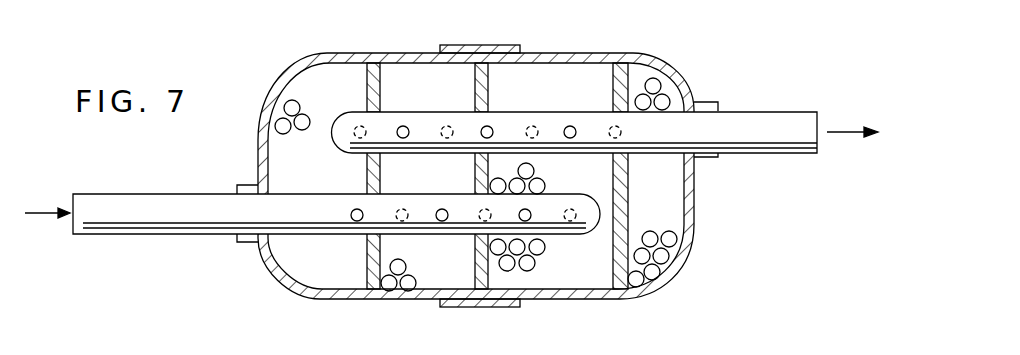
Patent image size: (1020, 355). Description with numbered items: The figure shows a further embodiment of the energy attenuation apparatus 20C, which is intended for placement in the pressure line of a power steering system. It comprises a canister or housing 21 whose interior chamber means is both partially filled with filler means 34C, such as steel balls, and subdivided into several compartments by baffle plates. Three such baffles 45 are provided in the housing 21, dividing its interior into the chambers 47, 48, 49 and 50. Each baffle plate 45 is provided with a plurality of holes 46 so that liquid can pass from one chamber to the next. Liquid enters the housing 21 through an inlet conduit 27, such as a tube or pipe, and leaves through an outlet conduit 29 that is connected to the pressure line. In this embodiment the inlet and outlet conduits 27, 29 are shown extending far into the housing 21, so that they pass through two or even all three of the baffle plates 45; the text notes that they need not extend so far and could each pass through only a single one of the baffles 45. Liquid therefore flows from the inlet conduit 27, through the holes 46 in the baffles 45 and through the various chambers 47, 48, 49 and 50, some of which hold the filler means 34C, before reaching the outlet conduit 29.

The energy attenuation apparatus 20C is at (710, 231).
The housing 21 is at (666, 72).
The inlet conduit 27 is at (153, 194).
The outlet conduit 29 is at (776, 153).
The filler means 34C is at (405, 266).
The baffle plates 45 is at (367, 101).
The holes 46 is at (367, 178).
The chamber 47 is at (315, 158).
The chamber 48 is at (420, 230).
The chamber 49 is at (583, 185).
The chamber 50 is at (670, 216).